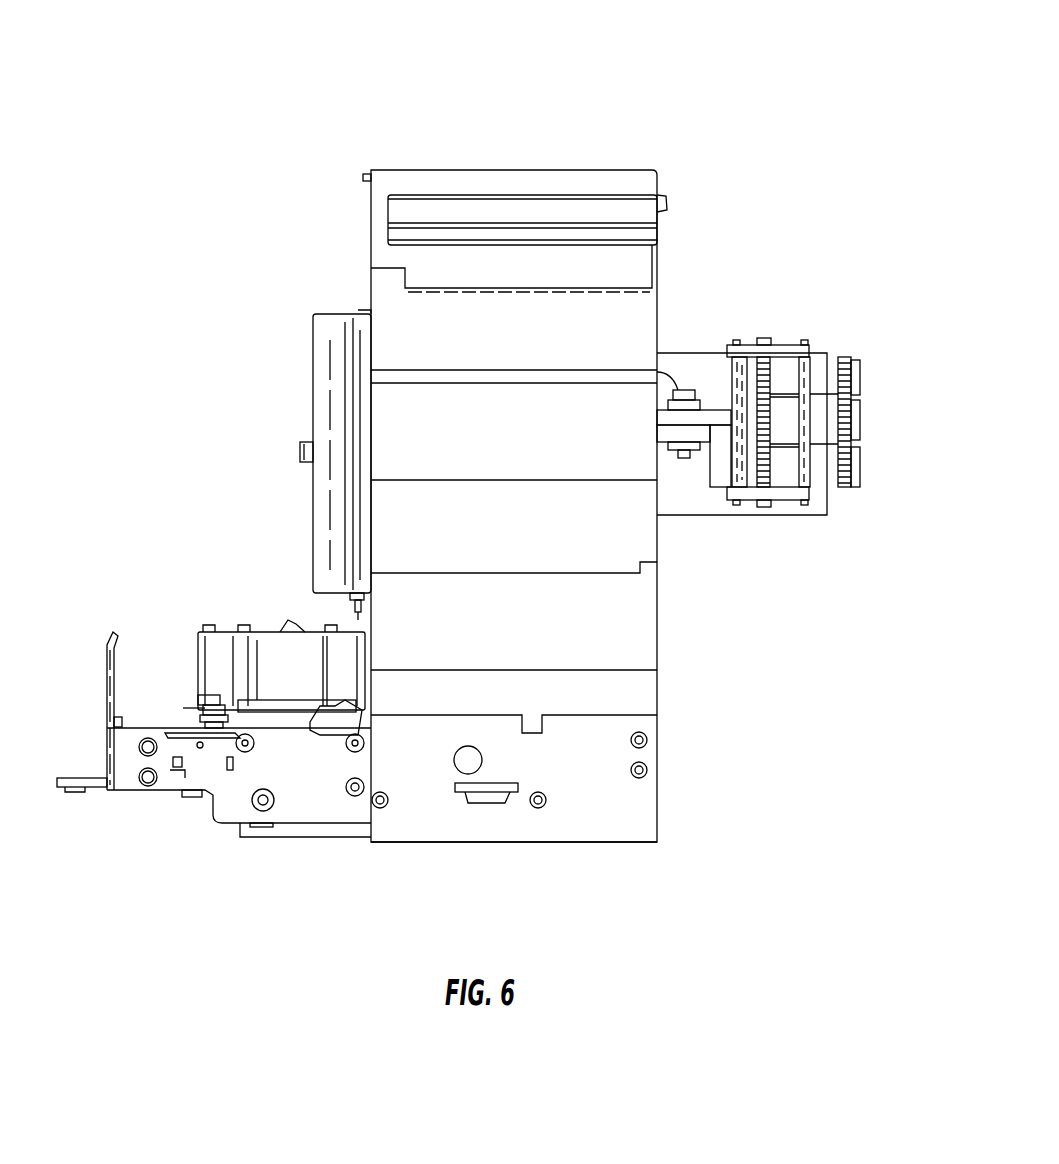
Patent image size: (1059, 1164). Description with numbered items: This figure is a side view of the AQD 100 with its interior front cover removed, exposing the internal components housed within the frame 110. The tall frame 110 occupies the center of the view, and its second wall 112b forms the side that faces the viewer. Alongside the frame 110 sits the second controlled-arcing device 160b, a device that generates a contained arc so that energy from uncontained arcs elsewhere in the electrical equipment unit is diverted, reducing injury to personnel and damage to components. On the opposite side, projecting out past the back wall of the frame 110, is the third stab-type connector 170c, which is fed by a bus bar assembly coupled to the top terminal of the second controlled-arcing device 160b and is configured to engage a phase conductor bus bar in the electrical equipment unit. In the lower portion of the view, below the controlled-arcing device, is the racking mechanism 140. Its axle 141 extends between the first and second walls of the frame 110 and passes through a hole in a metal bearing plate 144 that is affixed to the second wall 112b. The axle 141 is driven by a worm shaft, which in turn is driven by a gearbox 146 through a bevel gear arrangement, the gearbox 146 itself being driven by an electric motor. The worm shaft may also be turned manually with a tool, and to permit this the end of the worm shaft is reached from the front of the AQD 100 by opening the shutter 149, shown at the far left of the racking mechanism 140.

The AQD 100 is at (676, 72).
The frame 110 is at (530, 170).
The second wall 112b is at (648, 571).
The racking mechanism 140 is at (243, 877).
The axle 141 is at (466, 762).
The metal bearing plate 144 is at (577, 803).
The gearbox 146 is at (210, 643).
The shutter 149 is at (107, 738).
The second controlled-arcing device 160b is at (318, 405).
The third stab-type connector 170c is at (820, 365).